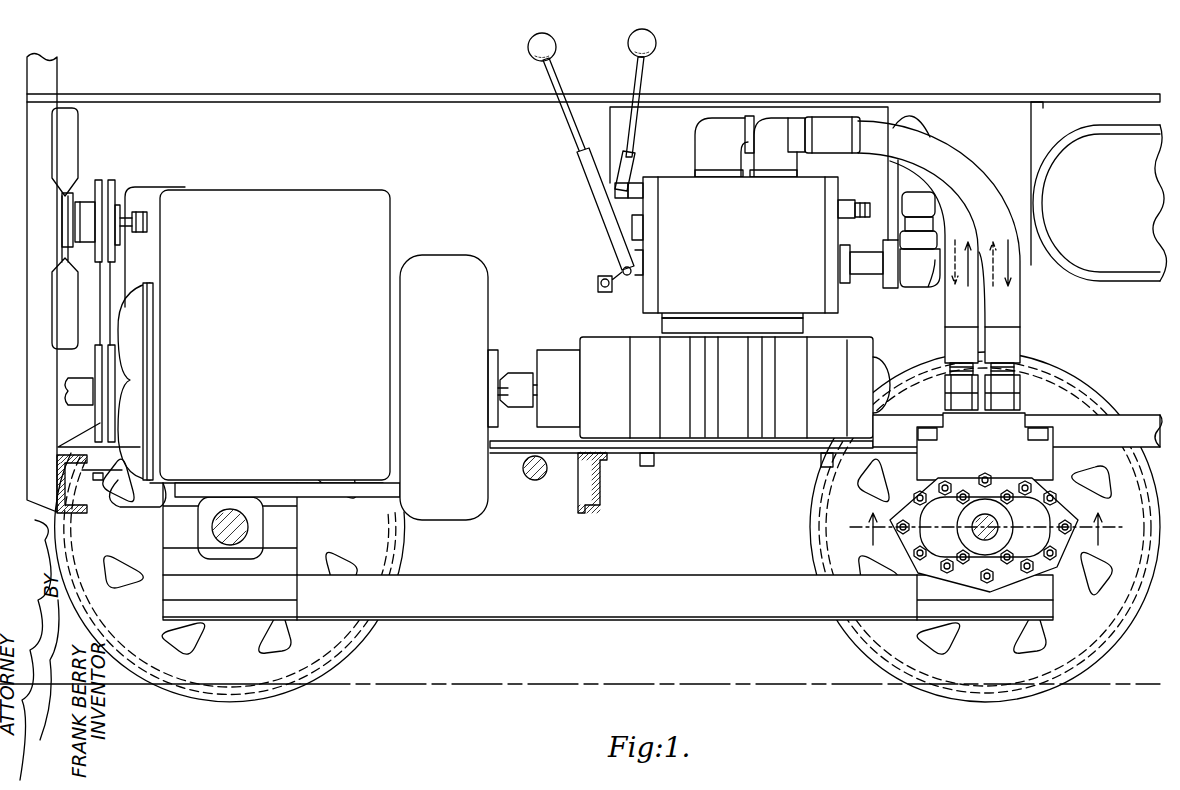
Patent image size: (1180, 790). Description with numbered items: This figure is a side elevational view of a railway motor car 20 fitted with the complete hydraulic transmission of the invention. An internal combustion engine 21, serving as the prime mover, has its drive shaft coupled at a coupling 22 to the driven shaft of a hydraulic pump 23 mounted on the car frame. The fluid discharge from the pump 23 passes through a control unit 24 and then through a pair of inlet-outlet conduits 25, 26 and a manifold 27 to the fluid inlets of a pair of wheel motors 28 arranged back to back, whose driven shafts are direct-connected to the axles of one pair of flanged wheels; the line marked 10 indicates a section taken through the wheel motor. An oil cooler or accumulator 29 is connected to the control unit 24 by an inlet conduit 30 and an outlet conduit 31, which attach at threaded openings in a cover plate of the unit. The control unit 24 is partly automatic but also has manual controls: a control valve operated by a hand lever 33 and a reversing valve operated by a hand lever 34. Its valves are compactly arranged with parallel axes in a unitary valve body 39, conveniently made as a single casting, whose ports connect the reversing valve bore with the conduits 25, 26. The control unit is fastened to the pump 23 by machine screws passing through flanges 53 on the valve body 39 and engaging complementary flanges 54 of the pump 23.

The section line 10- 10 is at (990, 532).
The railway motor car 20 is at (704, 608).
The internal combustion engine 21 is at (288, 202).
The coupling 22 is at (516, 376).
The hydraulic pump 23 is at (730, 427).
The control unit 24 is at (676, 167).
The inlet-outlet conduit 25 is at (935, 168).
The inlet-outlet conduit 26 is at (968, 175).
The manifold 27 is at (1017, 430).
The wheel motor 28 is at (1062, 545).
The oil cooler and/or accumulator 29 is at (712, 112).
The inlet conduit 30 is at (912, 121).
The outlet conduit 31 is at (870, 278).
The hand lever 33 is at (528, 47).
The hand lever 34 is at (648, 40).
The valve body 39 is at (752, 234).
The flange 53 is at (670, 310).
The flange 54 is at (670, 327).